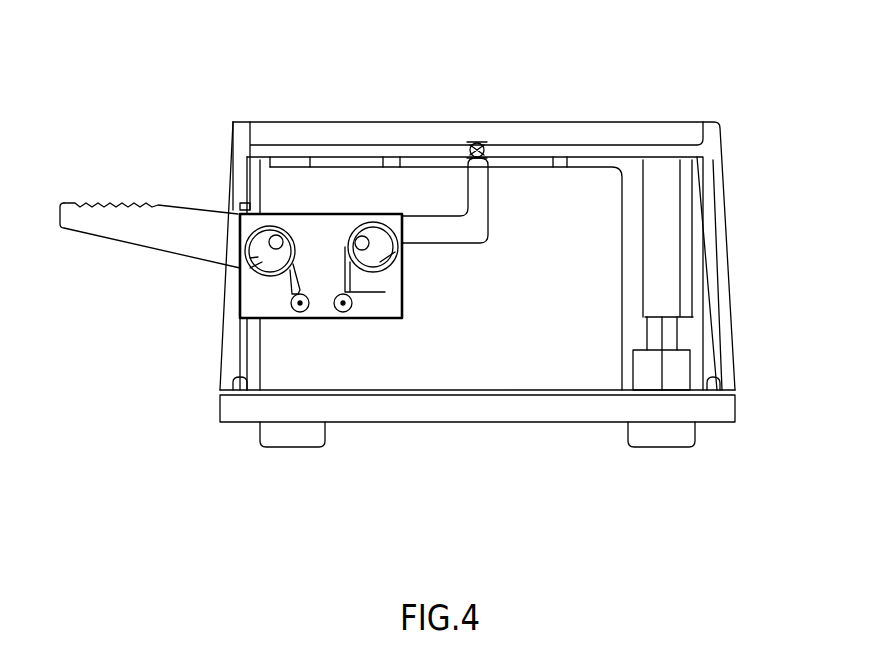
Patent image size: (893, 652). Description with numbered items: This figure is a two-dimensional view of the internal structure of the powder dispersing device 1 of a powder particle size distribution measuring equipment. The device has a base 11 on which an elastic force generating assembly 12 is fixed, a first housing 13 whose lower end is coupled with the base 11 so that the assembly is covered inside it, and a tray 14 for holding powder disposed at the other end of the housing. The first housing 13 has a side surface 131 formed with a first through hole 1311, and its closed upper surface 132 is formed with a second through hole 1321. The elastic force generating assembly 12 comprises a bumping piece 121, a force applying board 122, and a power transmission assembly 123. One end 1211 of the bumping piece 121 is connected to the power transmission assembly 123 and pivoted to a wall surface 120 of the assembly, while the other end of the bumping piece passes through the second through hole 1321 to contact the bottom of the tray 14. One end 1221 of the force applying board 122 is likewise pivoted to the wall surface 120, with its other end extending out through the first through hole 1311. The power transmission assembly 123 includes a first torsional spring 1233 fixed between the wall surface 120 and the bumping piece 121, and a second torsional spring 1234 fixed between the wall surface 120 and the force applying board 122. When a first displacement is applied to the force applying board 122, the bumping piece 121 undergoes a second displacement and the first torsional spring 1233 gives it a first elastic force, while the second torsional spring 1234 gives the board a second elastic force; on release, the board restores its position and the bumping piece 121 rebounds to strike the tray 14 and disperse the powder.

The powder dispersing device 1 is at (133, 39).
The base 11 is at (722, 406).
The elastic force generating assembly 12 is at (623, 200).
The first housing 13 is at (728, 255).
The tray 14 is at (647, 137).
The wall surface 120 is at (487, 272).
The bumping piece 121 is at (540, 143).
The force applying board 122 is at (77, 200).
The power transmission assembly 123 is at (317, 232).
The side surface 131 is at (233, 163).
The upper surface 132 is at (290, 153).
The one end of the bumping piece 1211 is at (402, 272).
The one end of the force applying board 1221 is at (280, 262).
The first torsional spring 1233 is at (377, 252).
The second torsional spring 1234 is at (262, 258).
The first through hole 1311 is at (238, 214).
The second through hole 1321 is at (460, 143).